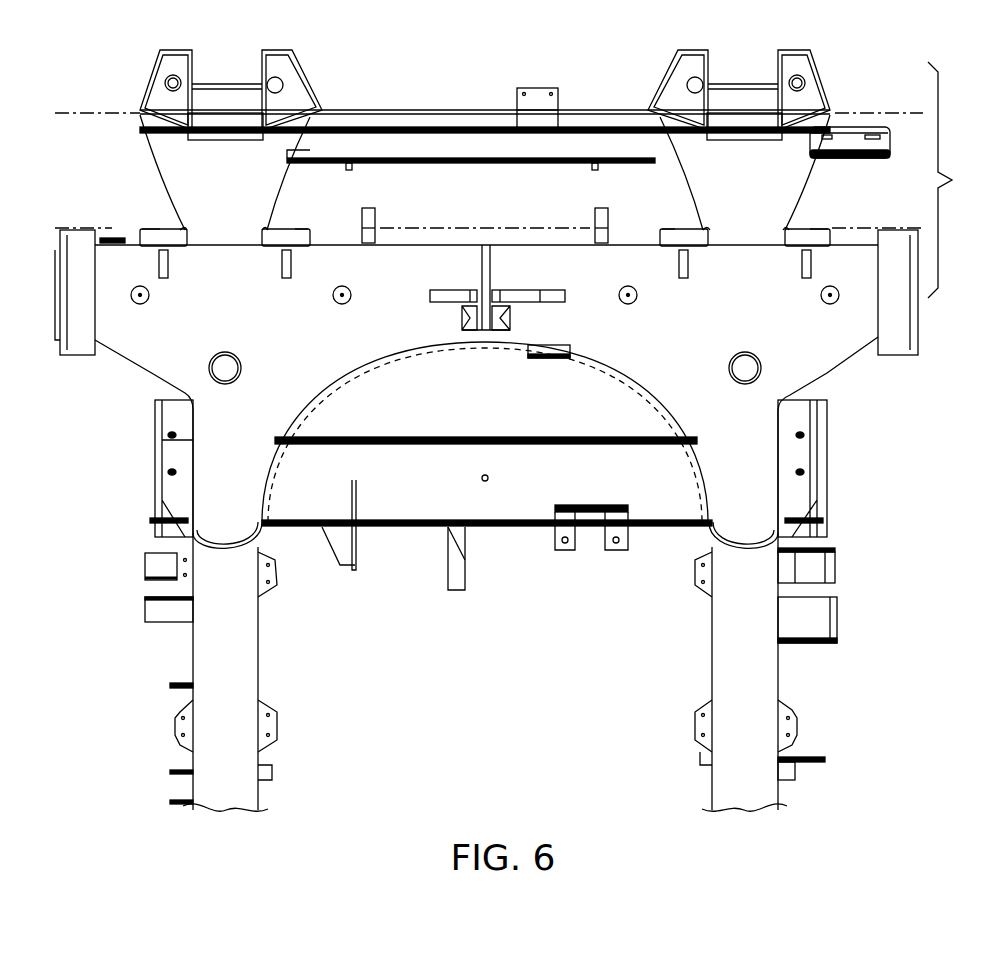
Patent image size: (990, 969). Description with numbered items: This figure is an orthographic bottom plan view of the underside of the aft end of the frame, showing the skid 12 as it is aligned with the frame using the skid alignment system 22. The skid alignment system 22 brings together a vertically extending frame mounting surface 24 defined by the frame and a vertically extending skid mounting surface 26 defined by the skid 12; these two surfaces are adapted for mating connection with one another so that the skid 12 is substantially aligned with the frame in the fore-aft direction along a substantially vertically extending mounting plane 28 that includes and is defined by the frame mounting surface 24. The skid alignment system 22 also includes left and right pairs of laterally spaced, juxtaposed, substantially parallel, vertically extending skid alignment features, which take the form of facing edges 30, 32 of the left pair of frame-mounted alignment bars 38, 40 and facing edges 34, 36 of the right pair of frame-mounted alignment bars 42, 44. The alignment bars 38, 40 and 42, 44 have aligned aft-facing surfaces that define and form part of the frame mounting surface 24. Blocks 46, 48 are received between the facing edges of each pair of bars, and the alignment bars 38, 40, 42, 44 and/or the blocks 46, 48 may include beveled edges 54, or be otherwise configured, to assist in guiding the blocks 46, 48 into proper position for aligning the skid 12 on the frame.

The skid 12 is at (477, 137).
The skid alignment system 22 is at (959, 180).
The frame mounting surface 24 is at (158, 227).
The skid mounting surface 26 is at (98, 112).
The mounting plane 28 is at (85, 228).
The facing edge 30 is at (187, 247).
The facing edge 32 is at (263, 247).
The facing edge 34 is at (708, 247).
The facing edge 36 is at (775, 247).
The alignment bar 38 is at (148, 229).
The alignment bar 40 is at (303, 229).
The alignment bar 42 is at (665, 240).
The alignment bar 44 is at (825, 229).
The block 46 is at (225, 122).
The block 48 is at (743, 122).
The beveled edges 54 is at (188, 231).